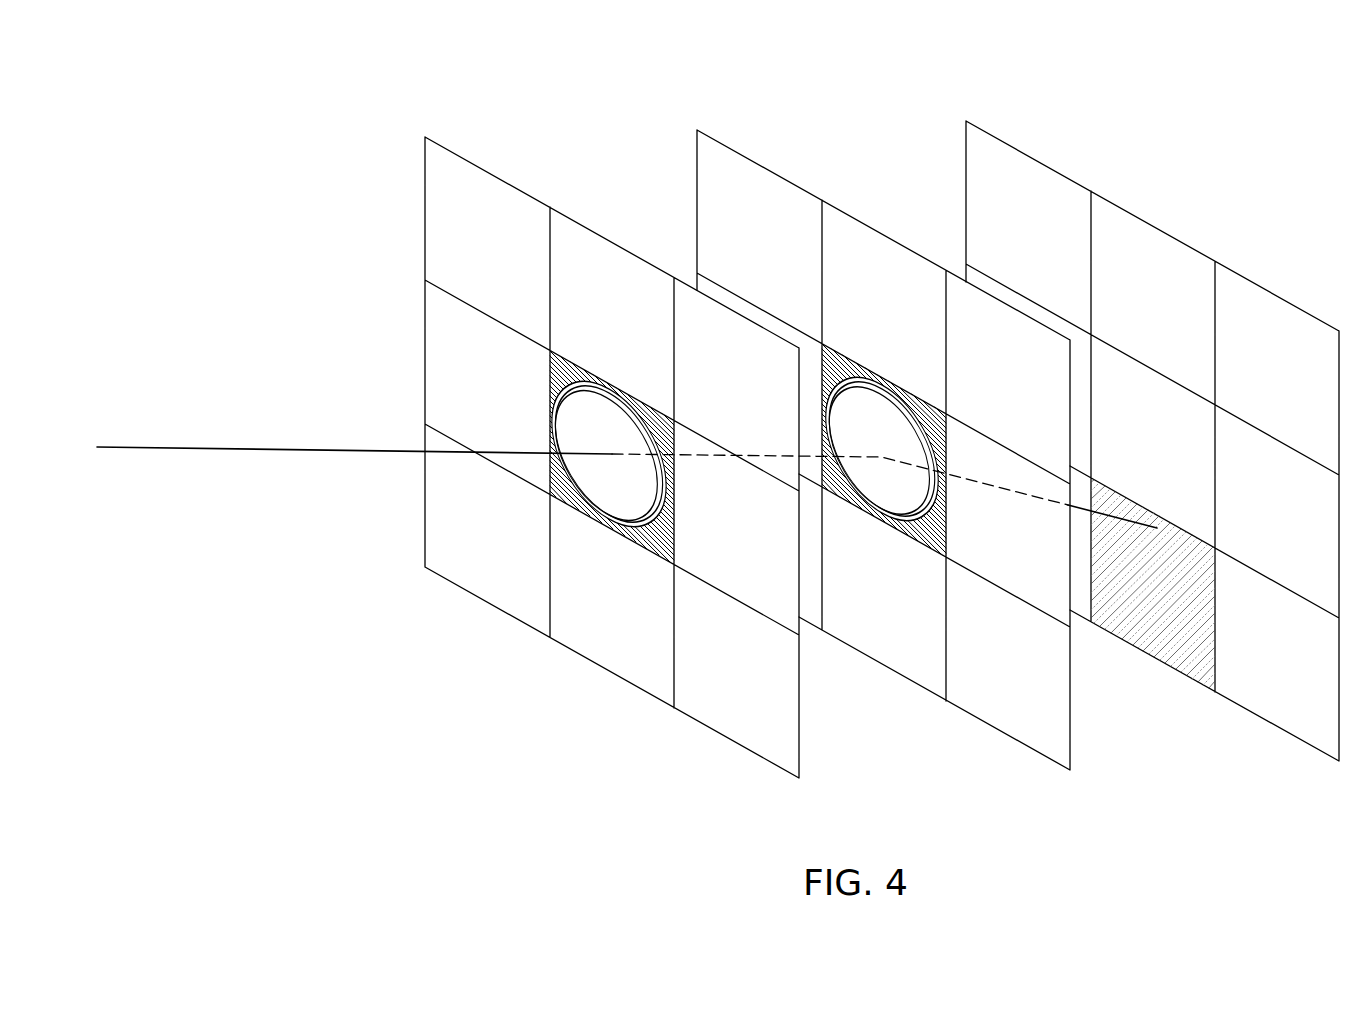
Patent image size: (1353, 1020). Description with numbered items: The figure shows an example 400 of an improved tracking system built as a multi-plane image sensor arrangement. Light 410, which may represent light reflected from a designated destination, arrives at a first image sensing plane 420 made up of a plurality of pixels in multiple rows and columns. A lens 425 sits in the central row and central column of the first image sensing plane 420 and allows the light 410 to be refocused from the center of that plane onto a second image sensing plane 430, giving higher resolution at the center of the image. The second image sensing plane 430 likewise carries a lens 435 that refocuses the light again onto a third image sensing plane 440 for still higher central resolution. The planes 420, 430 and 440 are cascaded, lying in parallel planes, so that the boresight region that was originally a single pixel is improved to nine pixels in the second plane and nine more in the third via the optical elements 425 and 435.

The example of an improved tracking system 400 is at (259, 92).
The light 410 is at (255, 446).
The first image sensing plane 420 is at (425, 137).
The lens 425 is at (580, 372).
The second image sensing plane 430 is at (697, 130).
The lens 435 is at (852, 366).
The third image sensing plane 440 is at (966, 121).